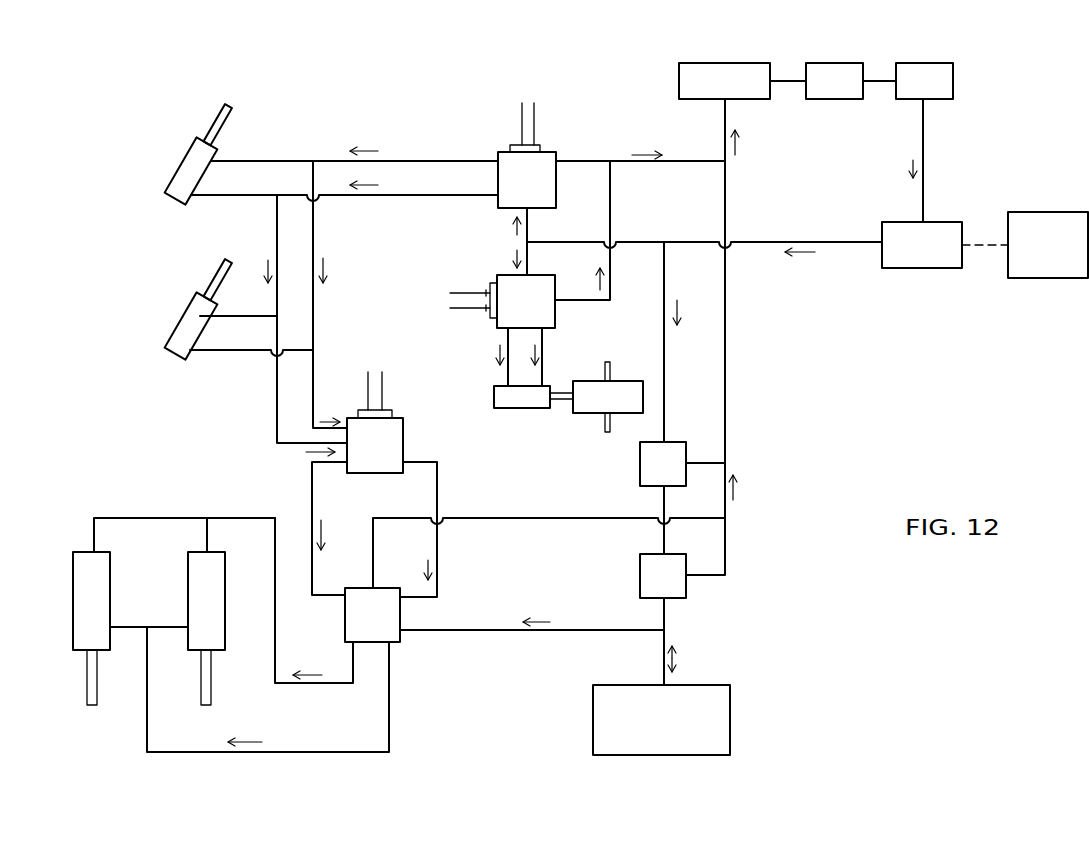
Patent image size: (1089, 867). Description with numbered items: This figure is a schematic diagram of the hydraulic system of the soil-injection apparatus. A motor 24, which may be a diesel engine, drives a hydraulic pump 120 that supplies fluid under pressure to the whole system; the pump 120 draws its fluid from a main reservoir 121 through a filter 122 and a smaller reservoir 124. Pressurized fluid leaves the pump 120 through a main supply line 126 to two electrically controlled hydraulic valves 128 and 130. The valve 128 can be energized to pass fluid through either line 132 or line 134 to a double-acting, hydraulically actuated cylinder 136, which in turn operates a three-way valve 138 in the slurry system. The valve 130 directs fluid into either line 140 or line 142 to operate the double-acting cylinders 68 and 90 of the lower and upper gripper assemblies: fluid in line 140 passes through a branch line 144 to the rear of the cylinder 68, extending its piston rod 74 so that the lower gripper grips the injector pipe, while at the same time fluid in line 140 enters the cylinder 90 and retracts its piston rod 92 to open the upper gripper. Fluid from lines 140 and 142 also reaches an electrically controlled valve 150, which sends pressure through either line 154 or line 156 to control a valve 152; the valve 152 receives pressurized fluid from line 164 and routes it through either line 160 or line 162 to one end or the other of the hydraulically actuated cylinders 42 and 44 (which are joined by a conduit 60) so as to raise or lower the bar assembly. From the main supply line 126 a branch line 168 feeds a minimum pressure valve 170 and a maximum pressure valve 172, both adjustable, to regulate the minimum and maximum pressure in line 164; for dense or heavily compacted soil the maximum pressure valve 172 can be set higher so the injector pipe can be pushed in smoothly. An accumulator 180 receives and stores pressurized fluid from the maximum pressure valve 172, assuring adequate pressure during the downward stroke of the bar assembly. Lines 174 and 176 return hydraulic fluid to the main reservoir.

The motor 24 is at (1035, 266).
The hydraulically actuated cylinder 42 is at (212, 600).
The hydraulically actuated cylinder 44 is at (84, 588).
The conduit 60 is at (152, 517).
The double-acting hydraulically actuated cylinder 68 is at (181, 323).
The piston rod 74 is at (226, 277).
The double-acting hydraulically actuated cylinder 90 is at (194, 162).
The piston rod 92 is at (221, 112).
The hydraulic pump 120 is at (912, 258).
The main reservoir 121 is at (728, 72).
The filter 122 is at (844, 72).
The smaller reservoir 124 is at (932, 72).
The main supply line 126 is at (665, 218).
The electrically controlled hydraulic valve 128 is at (508, 288).
The electrically controlled hydraulic valve 130 is at (537, 172).
The line 132 is at (506, 336).
The line 134 is at (550, 334).
The double-acting hydraulically actuated cylinder 136 is at (524, 398).
The three-way valve 138 is at (598, 402).
The line 140 is at (467, 130).
The line 142 is at (277, 227).
The branch line 144 is at (241, 352).
The electrically controlled valve 150 is at (390, 444).
The valve 152 is at (384, 628).
The line 154 is at (310, 582).
The line 156 is at (439, 563).
The line 160 is at (344, 685).
The line 162 is at (388, 720).
The line 164 is at (510, 632).
The branch line 168 is at (664, 286).
The minimum pressure valve 170 is at (673, 450).
The maximum pressure valve 172 is at (646, 558).
The line 174 is at (726, 170).
The line 176 is at (700, 135).
The accumulator 180 is at (710, 695).